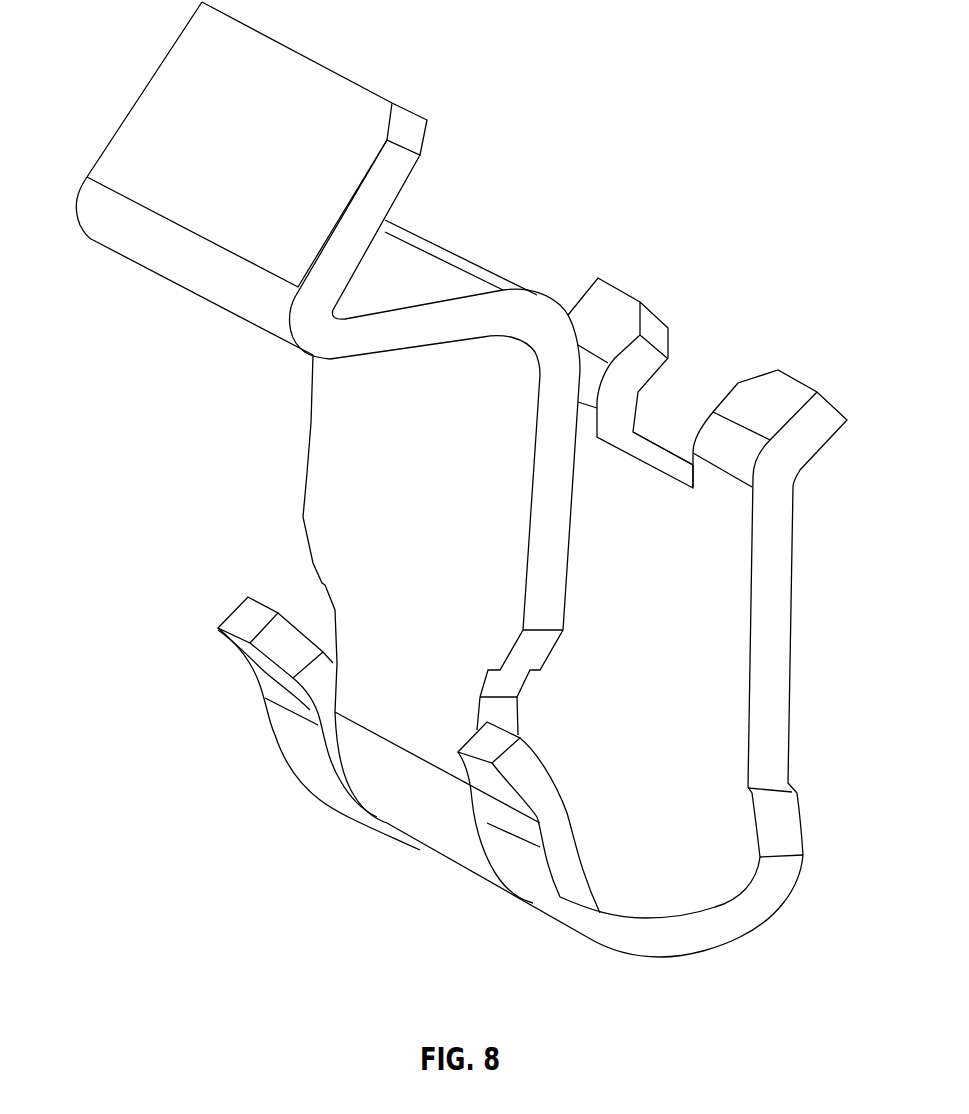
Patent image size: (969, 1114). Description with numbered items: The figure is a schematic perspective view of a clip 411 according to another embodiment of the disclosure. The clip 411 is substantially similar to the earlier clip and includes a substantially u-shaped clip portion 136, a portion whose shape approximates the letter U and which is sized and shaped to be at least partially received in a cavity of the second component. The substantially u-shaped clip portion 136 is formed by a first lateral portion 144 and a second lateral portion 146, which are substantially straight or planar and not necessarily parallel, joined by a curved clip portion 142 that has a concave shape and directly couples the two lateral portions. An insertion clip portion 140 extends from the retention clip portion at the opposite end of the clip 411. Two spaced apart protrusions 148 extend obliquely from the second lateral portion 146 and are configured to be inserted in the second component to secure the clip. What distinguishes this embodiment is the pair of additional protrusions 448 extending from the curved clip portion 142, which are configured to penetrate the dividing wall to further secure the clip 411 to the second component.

The insertion clip portion 140 is at (140, 110).
The clip 411 is at (437, 253).
The protrusion 148 is at (603, 293).
The second lateral portion 146 is at (785, 630).
The curved clip portion 142 is at (750, 918).
The substantially u-shaped clip portion 136 is at (678, 945).
The first lateral portion 144 is at (330, 463).
The protrusion 448 is at (240, 618).